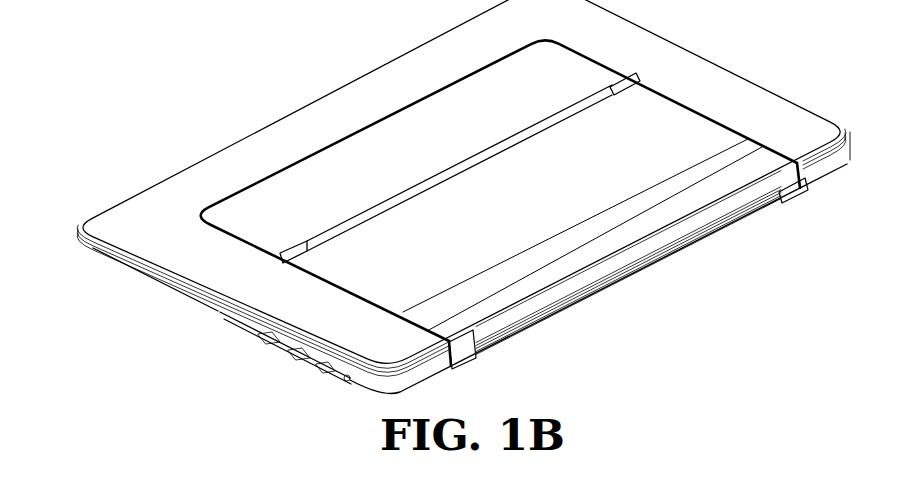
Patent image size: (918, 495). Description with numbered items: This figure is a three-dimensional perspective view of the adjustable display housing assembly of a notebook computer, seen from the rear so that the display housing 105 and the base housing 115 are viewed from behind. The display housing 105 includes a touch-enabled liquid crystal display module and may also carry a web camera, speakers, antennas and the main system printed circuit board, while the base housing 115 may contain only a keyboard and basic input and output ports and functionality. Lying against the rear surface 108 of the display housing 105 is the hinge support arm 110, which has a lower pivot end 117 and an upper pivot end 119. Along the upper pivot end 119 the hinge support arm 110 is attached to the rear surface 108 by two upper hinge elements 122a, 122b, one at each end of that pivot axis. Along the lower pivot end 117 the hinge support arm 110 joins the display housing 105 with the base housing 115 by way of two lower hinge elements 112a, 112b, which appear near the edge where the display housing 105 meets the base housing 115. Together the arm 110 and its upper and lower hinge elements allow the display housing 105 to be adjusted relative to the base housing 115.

The adjustable display housing assembly 105 is at (383, 64).
The rear surface 108 is at (314, 114).
The hinge support arm 110 is at (700, 115).
The lower hinge element 112a is at (473, 358).
The lower hinge element 112b is at (803, 197).
The base housing 115 is at (209, 313).
The lower pivot end 117 is at (645, 279).
The upper pivot end 119 is at (454, 177).
The upper hinge element 122a is at (291, 252).
The upper hinge element 122b is at (612, 86).